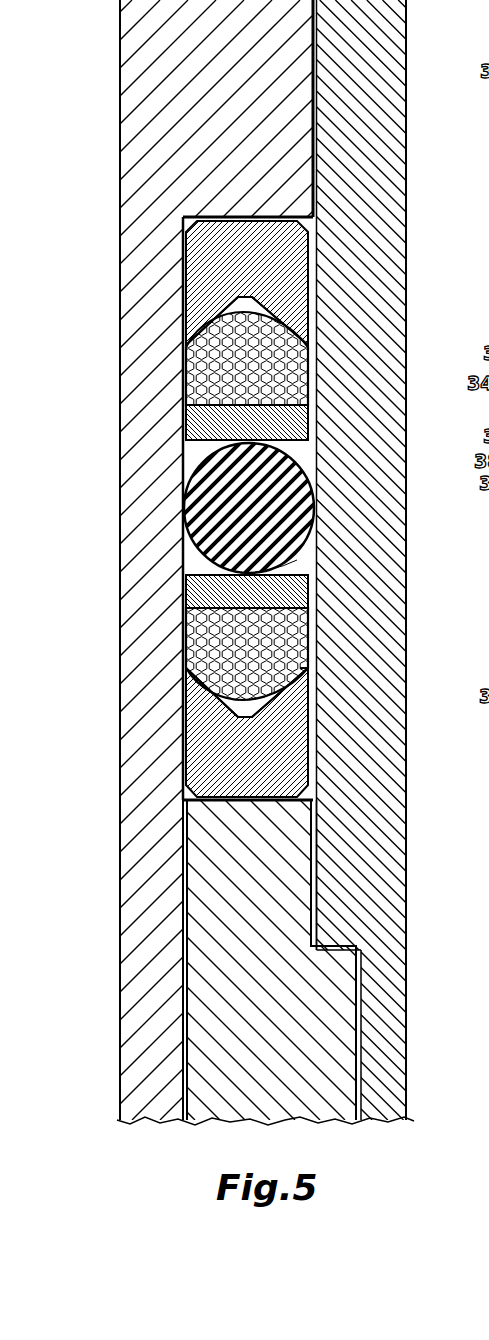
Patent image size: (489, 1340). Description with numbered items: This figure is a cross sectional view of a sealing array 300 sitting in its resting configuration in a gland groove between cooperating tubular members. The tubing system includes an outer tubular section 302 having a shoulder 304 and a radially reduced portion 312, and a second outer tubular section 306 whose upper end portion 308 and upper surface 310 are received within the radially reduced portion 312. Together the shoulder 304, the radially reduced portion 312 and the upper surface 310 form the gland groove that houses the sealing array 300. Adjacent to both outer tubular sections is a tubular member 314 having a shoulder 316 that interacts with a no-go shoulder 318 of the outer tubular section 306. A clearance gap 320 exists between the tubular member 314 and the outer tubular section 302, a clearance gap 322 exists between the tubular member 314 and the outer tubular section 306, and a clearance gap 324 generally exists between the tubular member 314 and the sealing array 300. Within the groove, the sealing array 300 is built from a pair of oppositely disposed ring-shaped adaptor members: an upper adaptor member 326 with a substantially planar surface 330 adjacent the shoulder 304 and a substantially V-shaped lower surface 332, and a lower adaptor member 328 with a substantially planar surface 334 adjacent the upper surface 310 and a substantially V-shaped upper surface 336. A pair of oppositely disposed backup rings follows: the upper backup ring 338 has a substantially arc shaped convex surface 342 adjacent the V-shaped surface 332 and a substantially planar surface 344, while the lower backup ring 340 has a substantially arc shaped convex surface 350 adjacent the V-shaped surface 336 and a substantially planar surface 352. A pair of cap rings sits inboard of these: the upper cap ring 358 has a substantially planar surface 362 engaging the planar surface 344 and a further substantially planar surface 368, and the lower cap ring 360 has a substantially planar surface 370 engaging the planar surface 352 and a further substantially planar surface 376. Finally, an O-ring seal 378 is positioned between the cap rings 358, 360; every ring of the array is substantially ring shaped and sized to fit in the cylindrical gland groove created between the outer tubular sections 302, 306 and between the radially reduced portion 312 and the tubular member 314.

The sealing array 300 is at (258, 509).
The outer tubular section 302 is at (244, 560).
The shoulder 304 is at (264, 508).
The outer tubular section 306 is at (200, 1038).
The upper end portion 308 is at (200, 952).
The upper surface 310 is at (244, 960).
The radially reduced portion 312 is at (128, 648).
The tubular member 314 is at (244, 560).
The shoulder 316 is at (337, 943).
The no-go shoulder 318 is at (340, 955).
The clearance gap 320 is at (313, 65).
The clearance gap 322 is at (313, 865).
The clearance gap 324 is at (395, 632).
The upper adaptor member 326 is at (237, 283).
The lower adaptor member 328 is at (259, 673).
The substantially planar surface 330 is at (275, 215).
The substantially V-shaped lower surface 332 is at (253, 358).
The substantially planar surface 334 is at (278, 800).
The substantially V-shaped upper surface 336 is at (298, 683).
The upper backup ring 338 is at (185, 365).
The lower backup ring 340 is at (185, 670).
The substantially arc shaped convex surface 342 is at (237, 307).
The substantially planar surface 344 is at (195, 406).
The substantially arc shaped convex surface 350 is at (232, 712).
The substantially planar surface 352 is at (176, 654).
The upper cap ring 358 is at (225, 415).
The lower cap ring 360 is at (198, 573).
The substantially planar surface 362 is at (226, 442).
The substantially planar surface 368 is at (282, 508).
The substantially planar surface 370 is at (220, 604).
The substantially planar surface 376 is at (297, 571).
The O-ring seal 378 is at (305, 512).